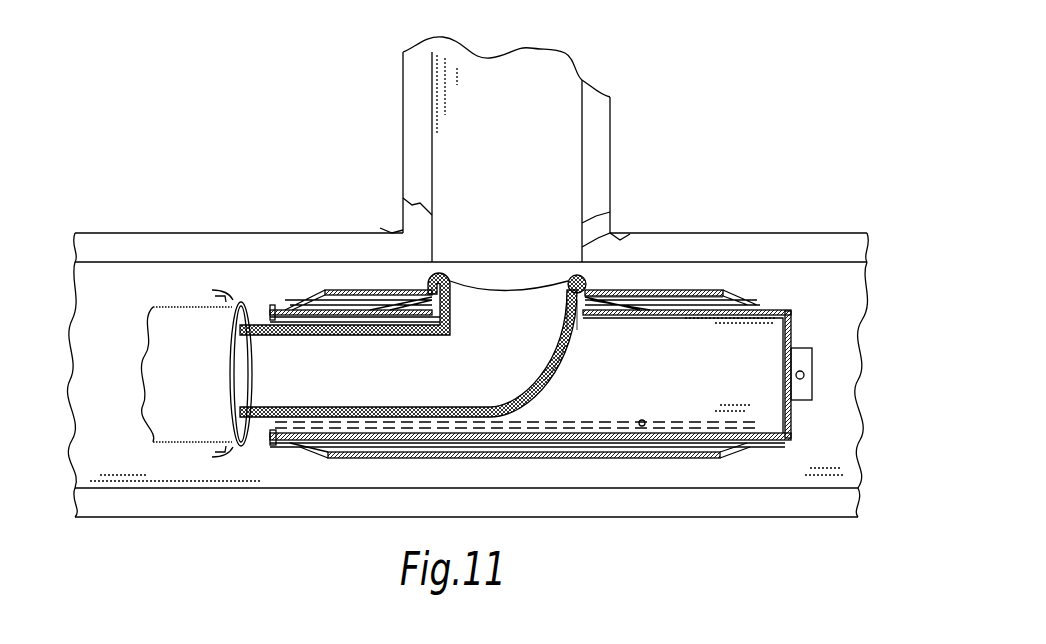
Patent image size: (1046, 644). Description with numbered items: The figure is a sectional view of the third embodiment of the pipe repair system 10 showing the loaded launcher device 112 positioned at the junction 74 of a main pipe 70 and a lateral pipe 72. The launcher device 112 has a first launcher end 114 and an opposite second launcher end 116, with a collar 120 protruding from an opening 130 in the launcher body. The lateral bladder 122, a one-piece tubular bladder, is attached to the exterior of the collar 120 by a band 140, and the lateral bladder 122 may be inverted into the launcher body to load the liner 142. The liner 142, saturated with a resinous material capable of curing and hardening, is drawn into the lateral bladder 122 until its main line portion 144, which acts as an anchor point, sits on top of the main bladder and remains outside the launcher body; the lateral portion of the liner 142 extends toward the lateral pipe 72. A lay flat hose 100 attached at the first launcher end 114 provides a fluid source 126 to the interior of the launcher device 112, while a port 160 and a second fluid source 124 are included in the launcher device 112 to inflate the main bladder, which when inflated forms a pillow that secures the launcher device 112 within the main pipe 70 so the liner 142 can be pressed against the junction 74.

The pipe lining assembly 10 is at (760, 178).
The main pipe 70 is at (770, 233).
The lateral pipe 72 is at (611, 140).
The junction 74 is at (610, 232).
The lay flat hose 100 is at (150, 352).
The launcher device 112 is at (795, 311).
The first launcher end 114 is at (272, 436).
The second launcher end 116 is at (452, 305).
The collar 120 is at (571, 300).
The lateral bladder 122 is at (567, 358).
The fluid source 124 is at (583, 420).
The fluid source 126 is at (160, 307).
The opening 130 is at (488, 287).
The band 140 is at (586, 285).
The liner 142 is at (662, 284).
The main line portion 144 is at (412, 292).
The port 160 is at (646, 421).